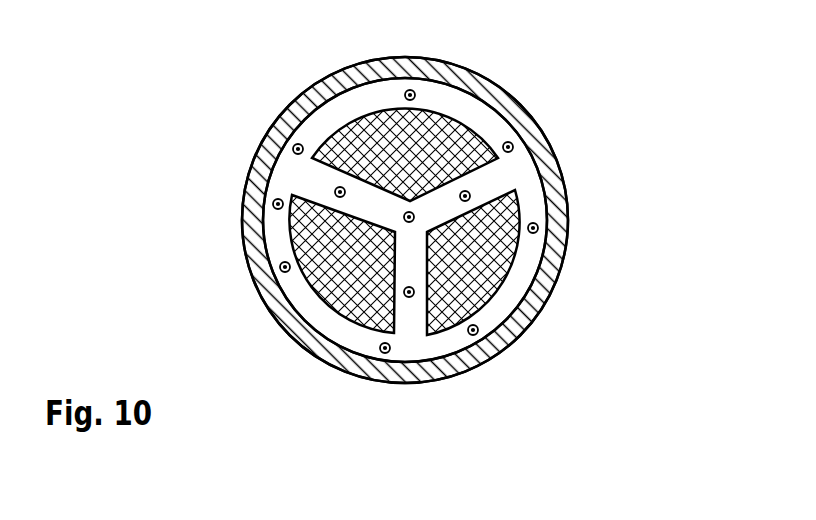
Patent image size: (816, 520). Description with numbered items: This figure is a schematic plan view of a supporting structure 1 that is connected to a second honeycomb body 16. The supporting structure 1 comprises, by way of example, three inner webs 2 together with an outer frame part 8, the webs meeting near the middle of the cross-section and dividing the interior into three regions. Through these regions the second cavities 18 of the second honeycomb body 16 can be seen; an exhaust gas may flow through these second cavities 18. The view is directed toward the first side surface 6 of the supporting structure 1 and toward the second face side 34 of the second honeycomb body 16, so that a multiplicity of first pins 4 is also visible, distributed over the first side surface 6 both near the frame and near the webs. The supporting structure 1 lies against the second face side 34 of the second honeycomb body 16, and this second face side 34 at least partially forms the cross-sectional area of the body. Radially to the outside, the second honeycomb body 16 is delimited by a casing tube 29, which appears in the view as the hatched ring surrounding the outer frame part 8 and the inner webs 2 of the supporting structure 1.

The supporting structure 1 is at (318, 220).
The inner webs 2 is at (411, 220).
The first pins 4 is at (466, 239).
The first side surface 6 is at (451, 132).
The outer frame part 8 is at (276, 264).
The second honeycomb body 16 is at (556, 264).
The second cavities 18 is at (556, 262).
The casing tube 29 is at (352, 220).
The second face side 34 is at (314, 337).